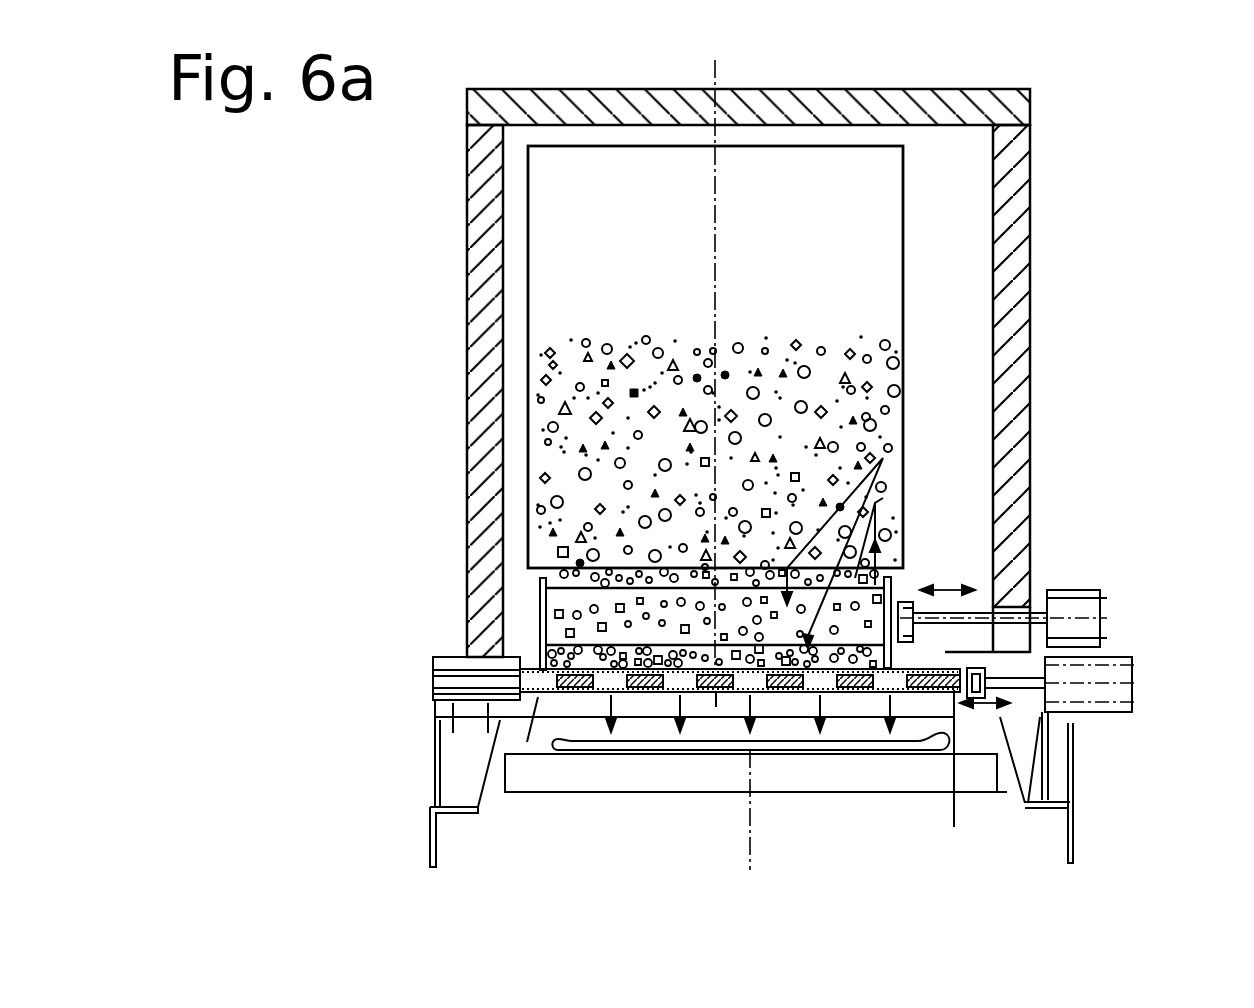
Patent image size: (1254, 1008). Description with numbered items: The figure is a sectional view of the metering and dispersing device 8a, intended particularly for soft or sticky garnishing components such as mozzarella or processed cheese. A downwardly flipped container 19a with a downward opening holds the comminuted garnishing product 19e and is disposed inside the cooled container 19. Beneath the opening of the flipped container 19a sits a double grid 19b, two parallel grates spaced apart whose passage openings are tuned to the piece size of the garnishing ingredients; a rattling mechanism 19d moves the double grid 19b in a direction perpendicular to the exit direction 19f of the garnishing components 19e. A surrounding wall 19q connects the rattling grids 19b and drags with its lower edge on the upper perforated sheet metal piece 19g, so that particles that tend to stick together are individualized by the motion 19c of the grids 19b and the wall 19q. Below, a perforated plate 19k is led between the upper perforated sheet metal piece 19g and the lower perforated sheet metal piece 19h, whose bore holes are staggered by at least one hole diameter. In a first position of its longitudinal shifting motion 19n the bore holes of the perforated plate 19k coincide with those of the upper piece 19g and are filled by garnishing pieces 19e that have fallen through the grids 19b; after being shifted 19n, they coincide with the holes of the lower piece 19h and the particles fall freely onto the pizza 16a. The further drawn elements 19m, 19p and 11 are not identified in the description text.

The metering and dispersing device 8a is at (1030, 103).
The cooled container 19 is at (1015, 157).
The downwardly flipped container 19a is at (903, 207).
The garnishing product 19e is at (857, 377).
The exit direction 19f is at (883, 458).
The double grid 19b is at (883, 498).
The motion of the rattling grids and wall 19c is at (955, 590).
The rattling mechanism 19d is at (1107, 625).
The drive motor 19m is at (1135, 693).
The longitudinal shifting motion 19n is at (982, 698).
The perforated plate 19k is at (954, 827).
The surrounding wall 19q is at (540, 588).
The upper perforated sheet metal piece 19g is at (538, 660).
The lower perforated sheet metal piece 19h is at (527, 743).
The perforated plate 19p is at (820, 709).
The pizza 16a is at (640, 745).
The substrate 11 is at (913, 773).